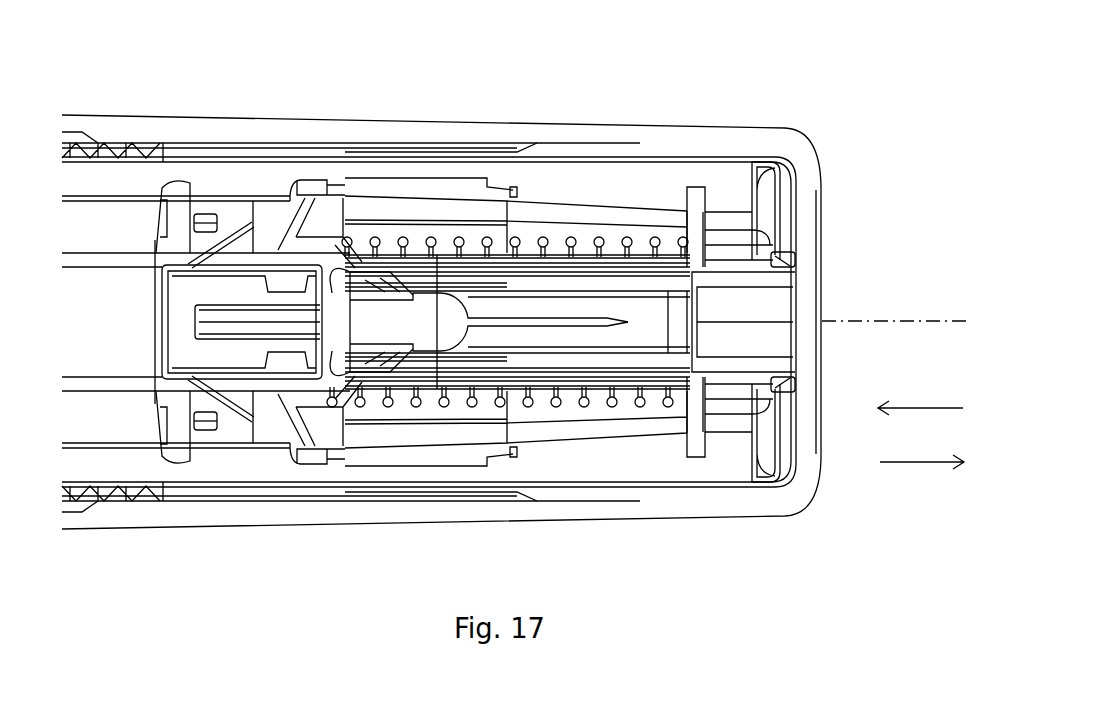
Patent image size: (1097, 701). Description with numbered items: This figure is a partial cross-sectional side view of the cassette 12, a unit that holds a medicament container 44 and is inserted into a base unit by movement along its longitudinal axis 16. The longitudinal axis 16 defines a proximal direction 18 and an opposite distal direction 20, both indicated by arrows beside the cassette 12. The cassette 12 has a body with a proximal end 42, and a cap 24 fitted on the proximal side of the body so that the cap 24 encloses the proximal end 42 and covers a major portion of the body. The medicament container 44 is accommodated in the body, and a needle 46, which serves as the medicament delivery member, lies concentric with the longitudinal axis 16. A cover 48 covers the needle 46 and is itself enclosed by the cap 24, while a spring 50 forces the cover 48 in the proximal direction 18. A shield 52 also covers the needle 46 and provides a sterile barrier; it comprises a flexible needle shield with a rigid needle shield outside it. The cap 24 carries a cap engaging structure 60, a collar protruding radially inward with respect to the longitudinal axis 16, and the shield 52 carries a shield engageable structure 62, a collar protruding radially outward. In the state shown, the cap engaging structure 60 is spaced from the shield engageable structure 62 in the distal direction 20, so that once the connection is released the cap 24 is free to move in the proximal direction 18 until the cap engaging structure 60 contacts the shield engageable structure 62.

The cassette 12 is at (737, 68).
The longitudinal axis 16 is at (908, 320).
The proximal direction 18 is at (922, 449).
The distal direction 20 is at (920, 396).
The cap 24 is at (262, 131).
The proximal end 42 is at (513, 190).
The medicament container 44 is at (118, 334).
The needle 46 is at (565, 320).
The cover 48 is at (695, 198).
The spring 50 is at (403, 240).
The shield 52 is at (534, 262).
The cap engaging structure 60 is at (730, 259).
The shield engageable structure 62 is at (773, 263).